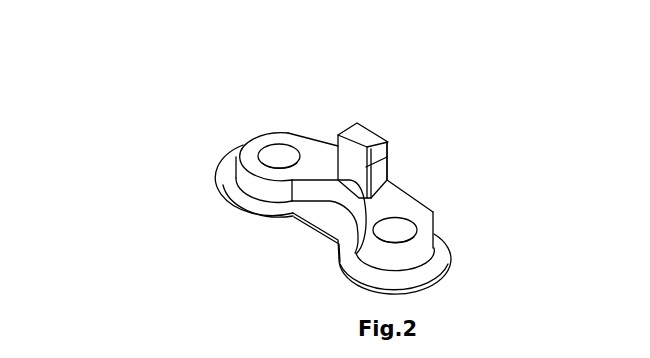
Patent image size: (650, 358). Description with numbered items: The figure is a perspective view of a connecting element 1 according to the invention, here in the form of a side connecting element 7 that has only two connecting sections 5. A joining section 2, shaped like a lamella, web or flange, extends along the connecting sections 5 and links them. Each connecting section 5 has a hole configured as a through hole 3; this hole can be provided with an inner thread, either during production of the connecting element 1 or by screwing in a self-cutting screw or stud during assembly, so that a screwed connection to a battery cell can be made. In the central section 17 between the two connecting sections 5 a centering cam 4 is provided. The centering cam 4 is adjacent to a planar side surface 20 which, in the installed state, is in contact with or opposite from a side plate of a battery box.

The connecting element 1 is at (217, 233).
The side connecting element 7 is at (299, 169).
The joining section 2 is at (333, 218).
The through hole 3 is at (247, 150).
The centering cam 4 is at (353, 176).
The connecting section 5 is at (275, 160).
The central section 17 is at (392, 165).
The planar side surface 20 is at (404, 186).